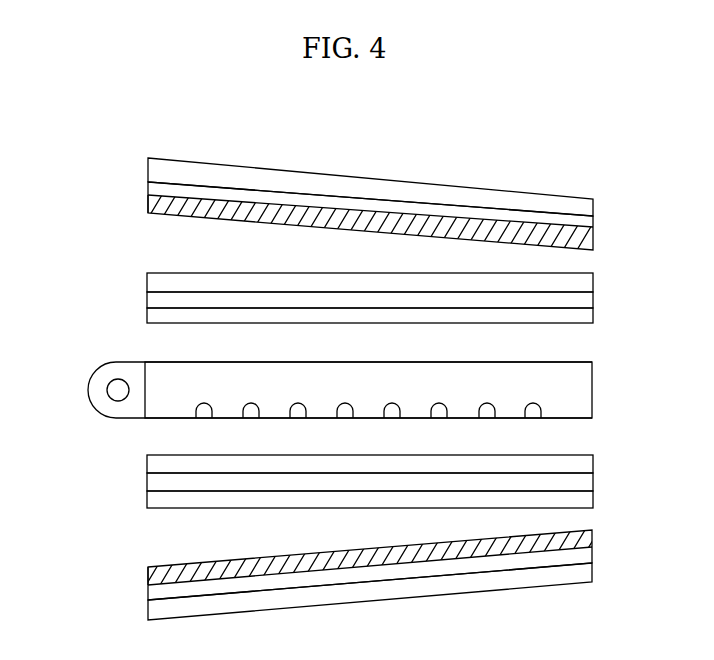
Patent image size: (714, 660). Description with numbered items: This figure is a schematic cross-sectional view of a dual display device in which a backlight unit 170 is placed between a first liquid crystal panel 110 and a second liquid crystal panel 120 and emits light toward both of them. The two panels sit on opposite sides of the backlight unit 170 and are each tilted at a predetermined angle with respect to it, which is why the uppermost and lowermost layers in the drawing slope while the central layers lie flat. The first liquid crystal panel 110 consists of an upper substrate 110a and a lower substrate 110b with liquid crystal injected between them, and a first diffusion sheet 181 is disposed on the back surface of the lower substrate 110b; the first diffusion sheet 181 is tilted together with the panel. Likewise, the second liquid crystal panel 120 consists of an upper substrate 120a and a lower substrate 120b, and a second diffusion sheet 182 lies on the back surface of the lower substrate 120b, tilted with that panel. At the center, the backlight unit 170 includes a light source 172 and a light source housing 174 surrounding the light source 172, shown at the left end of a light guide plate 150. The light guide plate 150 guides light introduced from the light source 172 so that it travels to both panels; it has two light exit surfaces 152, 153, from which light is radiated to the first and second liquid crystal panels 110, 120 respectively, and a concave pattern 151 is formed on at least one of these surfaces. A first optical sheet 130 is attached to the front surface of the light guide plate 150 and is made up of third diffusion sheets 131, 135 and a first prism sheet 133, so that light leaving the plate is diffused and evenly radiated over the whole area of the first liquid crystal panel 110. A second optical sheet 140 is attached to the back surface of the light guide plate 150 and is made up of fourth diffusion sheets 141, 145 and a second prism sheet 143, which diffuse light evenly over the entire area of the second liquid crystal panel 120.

The first liquid crystal panel 110 is at (387, 211).
The upper substrate 110a is at (594, 204).
The lower substrate 110b is at (594, 221).
The first diffusion sheet 181 is at (147, 203).
The first optical sheet 130 is at (405, 300).
The third diffusion sheet 135 is at (594, 281).
The first prism sheet 133 is at (594, 299).
The third diffusion sheet 131 is at (594, 317).
The light guide plate 150 is at (387, 391).
The concave pattern 151 is at (537, 419).
The light exit surface 152 is at (418, 361).
The light exit surface 153 is at (370, 420).
The backlight unit 170 is at (85, 372).
The light source 172 is at (105, 385).
The light source housing 174 is at (122, 361).
The second optical sheet 140 is at (405, 482).
The fourth diffusion sheet 141 is at (594, 464).
The second prism sheet 143 is at (594, 481).
The fourth diffusion sheet 145 is at (594, 498).
The second liquid crystal panel 120 is at (387, 562).
The upper substrate 120a is at (594, 570).
The lower substrate 120b is at (594, 552).
The second diffusion sheet 182 is at (147, 577).